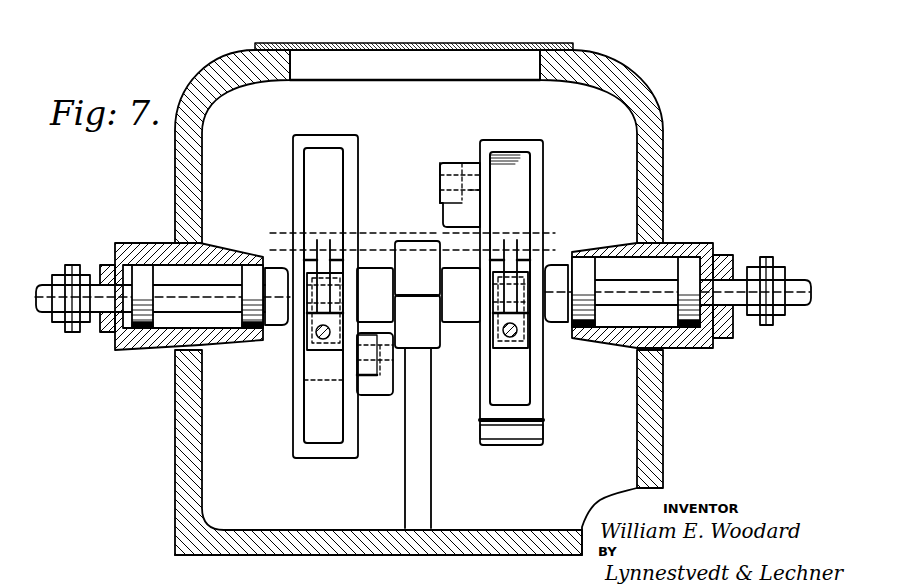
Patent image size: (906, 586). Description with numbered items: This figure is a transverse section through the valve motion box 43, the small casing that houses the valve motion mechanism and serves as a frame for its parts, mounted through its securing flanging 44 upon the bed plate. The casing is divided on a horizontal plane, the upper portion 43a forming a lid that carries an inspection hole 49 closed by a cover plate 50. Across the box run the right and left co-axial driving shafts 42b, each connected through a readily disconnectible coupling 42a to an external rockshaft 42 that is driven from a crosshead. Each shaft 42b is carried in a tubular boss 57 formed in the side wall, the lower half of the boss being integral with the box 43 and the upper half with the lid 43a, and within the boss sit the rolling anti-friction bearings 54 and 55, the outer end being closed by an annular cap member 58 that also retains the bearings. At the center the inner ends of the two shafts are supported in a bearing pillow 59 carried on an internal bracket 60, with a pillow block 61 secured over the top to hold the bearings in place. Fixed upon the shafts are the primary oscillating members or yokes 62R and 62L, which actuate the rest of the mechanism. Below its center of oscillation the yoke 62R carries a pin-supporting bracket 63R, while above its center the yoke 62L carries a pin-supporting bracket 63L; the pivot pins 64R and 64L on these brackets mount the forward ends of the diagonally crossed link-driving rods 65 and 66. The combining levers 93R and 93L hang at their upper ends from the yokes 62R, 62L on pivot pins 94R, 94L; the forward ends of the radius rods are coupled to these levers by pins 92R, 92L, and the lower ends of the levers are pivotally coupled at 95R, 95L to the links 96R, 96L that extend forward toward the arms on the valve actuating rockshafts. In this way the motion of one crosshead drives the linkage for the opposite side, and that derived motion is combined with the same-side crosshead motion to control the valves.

The rockshaft 42 is at (42, 285).
The coupling 42a is at (67, 333).
The driving shaft 42b is at (167, 303).
The valve motion box 43 is at (653, 403).
The upper portion of the box 43a is at (637, 98).
The securing flanging 44 is at (183, 545).
The inspection hole 49 is at (420, 68).
The cover plate 50 is at (412, 45).
The bearing 54 is at (138, 268).
The bearing 55 is at (250, 268).
The tubular boss 57 is at (227, 337).
The annular cap member 58 is at (115, 267).
The bearing pillow 59 is at (417, 321).
The internal bracket 60 is at (420, 468).
The pillow block 61 is at (410, 247).
The primary oscillating member 62R is at (298, 160).
The primary oscillating member 62L is at (533, 163).
The pin-supporting bracket 63R is at (380, 397).
The pin-supporting bracket 63L is at (448, 163).
The pivot pin 64R is at (338, 380).
The pivot pin 64L is at (441, 180).
The link-driving rod 65 is at (362, 336).
The link-driving rod 66 is at (467, 163).
The pin 92R is at (312, 292).
The pin 92L is at (525, 295).
The combining lever 93R is at (328, 267).
The combining lever 93L is at (507, 270).
The pivot pin 94R is at (357, 238).
The pivot pin 94L is at (537, 243).
The pivotal coupling 95R is at (307, 335).
The pivotal coupling 95L is at (520, 352).
The link 96R is at (325, 350).
The link 96L is at (503, 332).